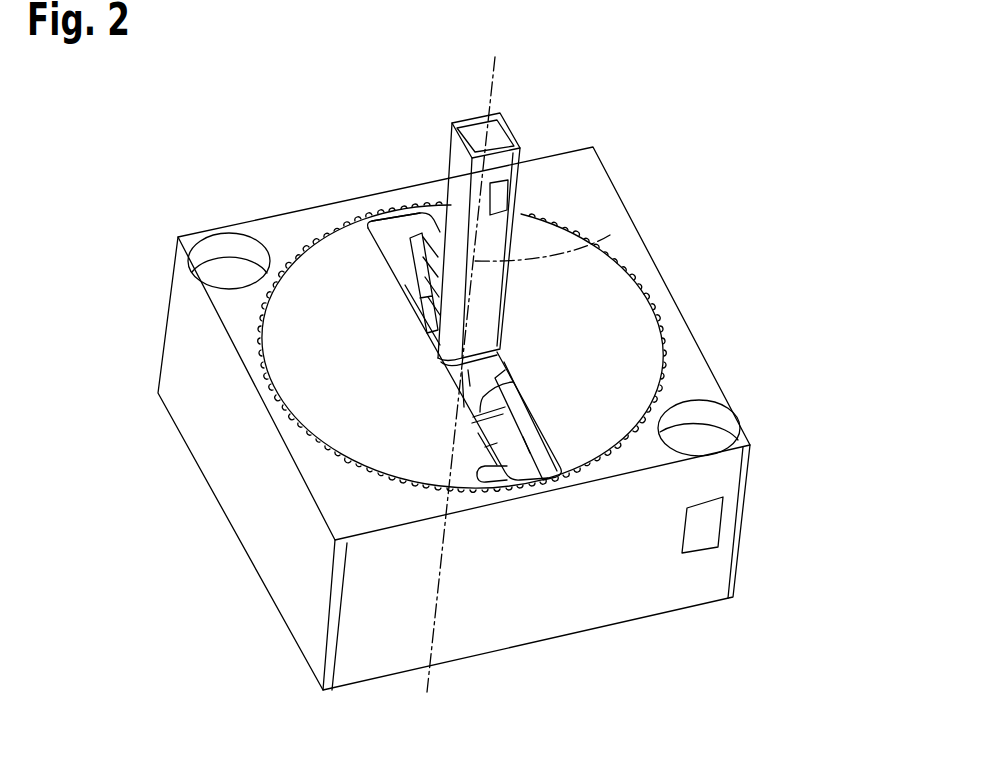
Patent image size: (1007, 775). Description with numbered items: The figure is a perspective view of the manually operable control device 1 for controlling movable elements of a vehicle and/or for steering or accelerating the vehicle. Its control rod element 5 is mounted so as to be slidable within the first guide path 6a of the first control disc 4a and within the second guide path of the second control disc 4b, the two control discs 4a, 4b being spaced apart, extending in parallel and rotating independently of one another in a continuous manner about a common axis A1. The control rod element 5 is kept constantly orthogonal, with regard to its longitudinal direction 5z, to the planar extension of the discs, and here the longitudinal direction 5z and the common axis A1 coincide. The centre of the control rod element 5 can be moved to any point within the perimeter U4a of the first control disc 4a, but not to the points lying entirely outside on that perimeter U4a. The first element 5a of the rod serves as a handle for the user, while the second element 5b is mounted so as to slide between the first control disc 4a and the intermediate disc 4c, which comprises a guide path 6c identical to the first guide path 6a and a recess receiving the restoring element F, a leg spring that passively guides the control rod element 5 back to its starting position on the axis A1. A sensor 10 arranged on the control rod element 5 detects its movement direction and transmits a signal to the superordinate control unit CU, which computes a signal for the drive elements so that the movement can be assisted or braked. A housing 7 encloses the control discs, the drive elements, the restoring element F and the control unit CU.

The control device 1 is at (538, 418).
The housing 7 is at (333, 490).
The control unit CU is at (710, 523).
The first control disc 4a is at (632, 332).
The perimeter of the first control disc U4a is at (655, 295).
The intermediate disc 4c is at (390, 253).
The first guide path 6a is at (368, 228).
The control rod element 5 is at (443, 379).
The common axis A1 is at (488, 97).
The first element 5a is at (460, 157).
The sensor 10 is at (500, 197).
The longitudinal direction 5z is at (610, 235).
The second element 5b is at (460, 407).
The guide path 6c is at (520, 440).
The second control disc 4b is at (477, 480).
The restoring element F is at (513, 382).